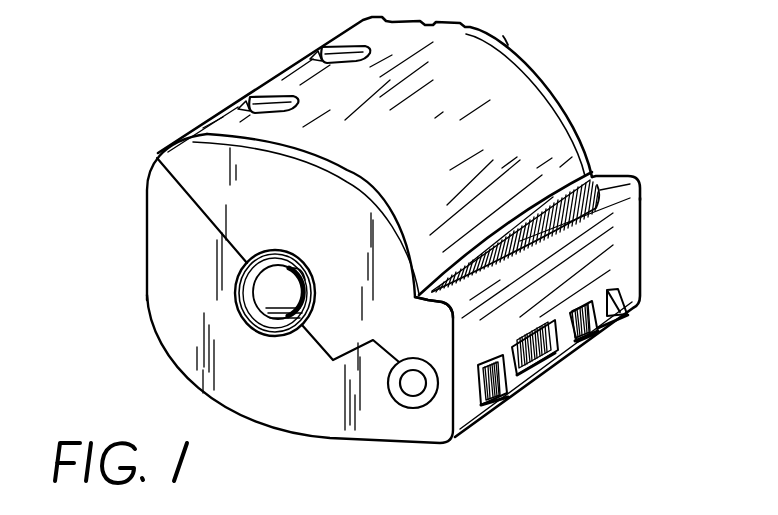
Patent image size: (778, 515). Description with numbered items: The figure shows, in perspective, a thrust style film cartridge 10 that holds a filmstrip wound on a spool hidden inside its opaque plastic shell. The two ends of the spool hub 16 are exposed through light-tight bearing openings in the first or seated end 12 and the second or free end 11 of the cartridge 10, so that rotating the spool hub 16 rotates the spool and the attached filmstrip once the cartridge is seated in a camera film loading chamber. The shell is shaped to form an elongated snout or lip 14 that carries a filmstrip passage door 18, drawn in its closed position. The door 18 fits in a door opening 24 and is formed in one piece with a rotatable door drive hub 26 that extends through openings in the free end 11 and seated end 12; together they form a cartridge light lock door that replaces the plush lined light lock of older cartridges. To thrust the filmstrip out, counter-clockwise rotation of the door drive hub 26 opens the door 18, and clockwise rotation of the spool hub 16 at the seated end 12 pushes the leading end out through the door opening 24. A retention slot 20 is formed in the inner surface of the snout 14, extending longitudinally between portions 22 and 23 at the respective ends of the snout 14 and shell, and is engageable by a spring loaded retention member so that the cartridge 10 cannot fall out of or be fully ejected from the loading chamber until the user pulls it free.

The film cartridge 10 is at (112, 203).
The free end 11 is at (174, 289).
The seated end 12 is at (521, 53).
The snout 14 is at (631, 240).
The spool hub 16 is at (277, 299).
The filmstrip passage door 18 is at (562, 334).
The retention slot 20 is at (611, 176).
The snout end portion 22 is at (443, 313).
The shell end portion 23 is at (662, 156).
The door opening 24 is at (615, 322).
The door drive hub 26 is at (417, 393).